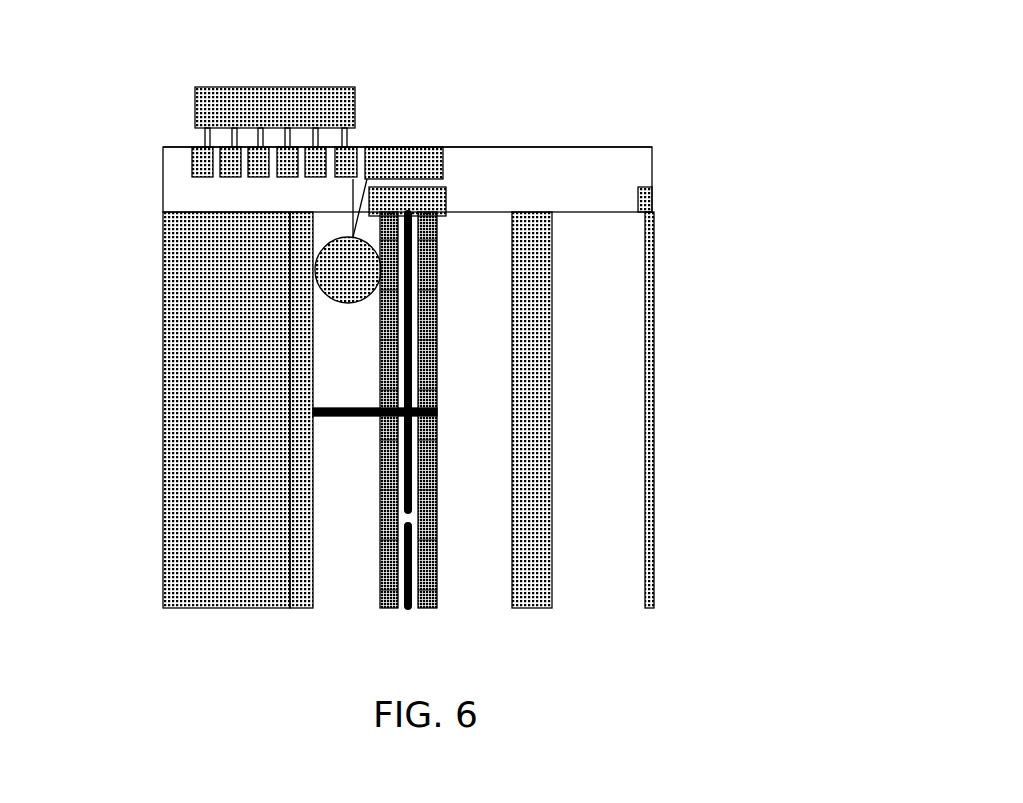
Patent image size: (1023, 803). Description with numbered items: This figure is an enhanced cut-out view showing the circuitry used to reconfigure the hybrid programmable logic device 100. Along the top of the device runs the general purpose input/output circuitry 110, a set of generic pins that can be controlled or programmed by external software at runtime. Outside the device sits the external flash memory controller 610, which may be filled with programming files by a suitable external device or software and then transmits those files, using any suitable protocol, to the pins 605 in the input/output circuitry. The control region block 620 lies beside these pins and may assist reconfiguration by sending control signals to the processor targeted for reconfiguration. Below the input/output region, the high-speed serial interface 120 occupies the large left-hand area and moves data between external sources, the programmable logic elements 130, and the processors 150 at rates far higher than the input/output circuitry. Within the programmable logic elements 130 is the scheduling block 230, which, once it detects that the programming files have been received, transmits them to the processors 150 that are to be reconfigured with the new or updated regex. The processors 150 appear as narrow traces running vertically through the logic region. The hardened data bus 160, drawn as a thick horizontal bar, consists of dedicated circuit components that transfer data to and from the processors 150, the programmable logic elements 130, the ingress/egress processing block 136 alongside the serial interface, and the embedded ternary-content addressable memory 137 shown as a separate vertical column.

The hybrid programmable logic device 100 is at (440, 50).
The general purpose input/output circuitry 110 is at (408, 377).
The high-speed serial interface 120 is at (226, 410).
The programmable logic elements 130 is at (372, 346).
The ingress/egress processing block 136 is at (301, 410).
The embedded ternary-content addressable memory 137 is at (532, 410).
The processors 150 is at (385, 455).
The hardened data bus 160 is at (327, 408).
The scheduling block 230 is at (330, 302).
The pins 605 is at (193, 170).
The external flash memory controller 610 is at (232, 87).
The control region block 620 is at (395, 147).